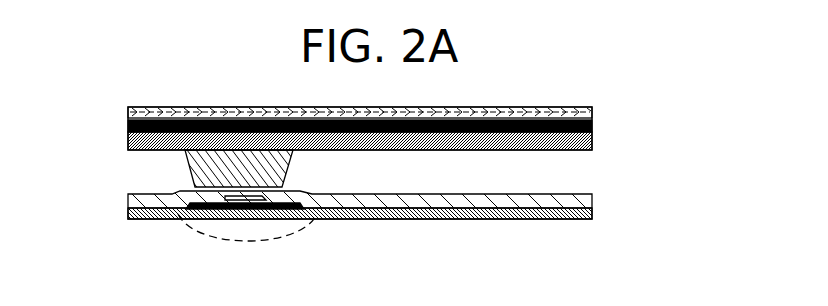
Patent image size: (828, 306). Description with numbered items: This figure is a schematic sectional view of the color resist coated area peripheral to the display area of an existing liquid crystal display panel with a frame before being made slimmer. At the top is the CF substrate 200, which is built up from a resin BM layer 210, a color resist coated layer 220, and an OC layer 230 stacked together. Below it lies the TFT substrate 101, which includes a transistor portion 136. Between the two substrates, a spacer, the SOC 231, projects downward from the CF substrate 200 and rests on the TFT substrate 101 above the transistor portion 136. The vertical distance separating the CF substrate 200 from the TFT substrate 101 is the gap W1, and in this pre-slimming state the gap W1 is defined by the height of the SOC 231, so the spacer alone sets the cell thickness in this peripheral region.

The CF substrate 200 is at (593, 107).
The resin BM layer 210 is at (593, 126).
The color resist (coated) layer 220 is at (357, 118).
The OC layer 230 is at (593, 147).
The SOC 231 is at (190, 168).
The TFT substrate 101 is at (383, 225).
The transistor portion 136 is at (193, 233).
The gap W1 is at (544, 151).